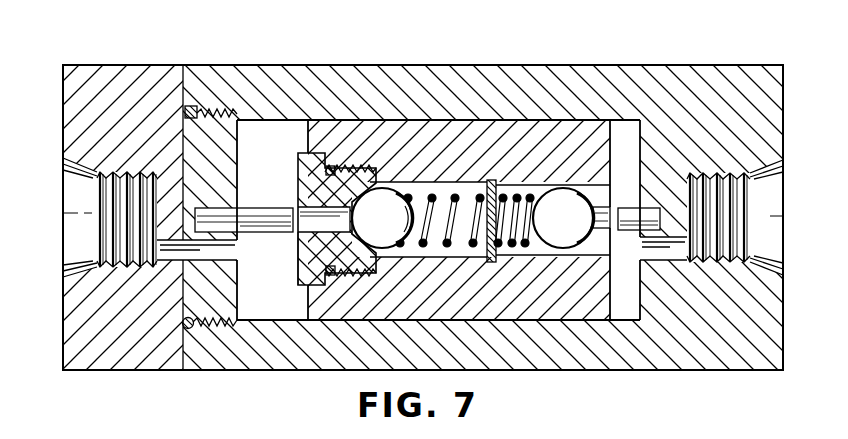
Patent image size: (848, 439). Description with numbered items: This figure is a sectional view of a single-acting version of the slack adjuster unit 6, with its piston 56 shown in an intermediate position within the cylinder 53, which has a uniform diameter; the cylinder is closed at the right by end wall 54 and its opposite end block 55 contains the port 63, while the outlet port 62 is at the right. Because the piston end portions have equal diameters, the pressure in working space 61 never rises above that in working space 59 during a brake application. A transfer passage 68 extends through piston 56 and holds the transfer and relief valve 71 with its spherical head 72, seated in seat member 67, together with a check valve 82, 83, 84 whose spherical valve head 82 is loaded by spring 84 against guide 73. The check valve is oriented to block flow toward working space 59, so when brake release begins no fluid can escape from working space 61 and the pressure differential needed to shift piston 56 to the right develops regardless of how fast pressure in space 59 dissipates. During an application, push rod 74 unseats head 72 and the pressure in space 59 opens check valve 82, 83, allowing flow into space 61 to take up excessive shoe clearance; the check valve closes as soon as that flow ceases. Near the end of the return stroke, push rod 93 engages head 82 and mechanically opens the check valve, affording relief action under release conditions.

The slack adjuster unit 6 is at (539, 371).
The cylinder 53 is at (216, 371).
The end wall 54 is at (783, 85).
The left end block 55 is at (147, 65).
The piston 56 is at (508, 114).
The working space 59 is at (630, 314).
The working space 61 is at (276, 151).
The outlet port 62 is at (768, 265).
The inlet port 63 is at (84, 273).
The seat member 67 is at (297, 169).
The transfer passage 68 is at (300, 233).
The transfer and relief valve 71 is at (382, 218).
The spherical valve head 72 is at (305, 204).
The spring guide 73 is at (447, 255).
The push rod 74 is at (247, 233).
The spherical valve head 82 is at (563, 218).
The check valve 83 is at (556, 250).
The check valve 84 is at (518, 254).
The push rod 93 is at (628, 208).